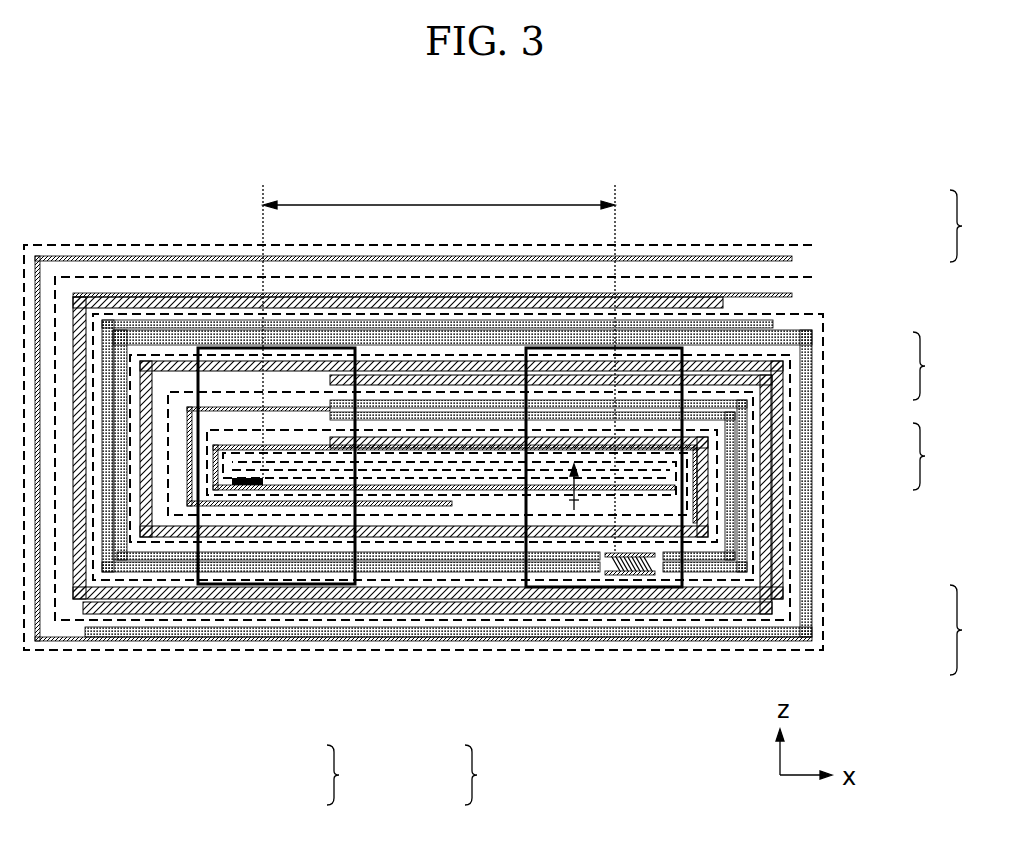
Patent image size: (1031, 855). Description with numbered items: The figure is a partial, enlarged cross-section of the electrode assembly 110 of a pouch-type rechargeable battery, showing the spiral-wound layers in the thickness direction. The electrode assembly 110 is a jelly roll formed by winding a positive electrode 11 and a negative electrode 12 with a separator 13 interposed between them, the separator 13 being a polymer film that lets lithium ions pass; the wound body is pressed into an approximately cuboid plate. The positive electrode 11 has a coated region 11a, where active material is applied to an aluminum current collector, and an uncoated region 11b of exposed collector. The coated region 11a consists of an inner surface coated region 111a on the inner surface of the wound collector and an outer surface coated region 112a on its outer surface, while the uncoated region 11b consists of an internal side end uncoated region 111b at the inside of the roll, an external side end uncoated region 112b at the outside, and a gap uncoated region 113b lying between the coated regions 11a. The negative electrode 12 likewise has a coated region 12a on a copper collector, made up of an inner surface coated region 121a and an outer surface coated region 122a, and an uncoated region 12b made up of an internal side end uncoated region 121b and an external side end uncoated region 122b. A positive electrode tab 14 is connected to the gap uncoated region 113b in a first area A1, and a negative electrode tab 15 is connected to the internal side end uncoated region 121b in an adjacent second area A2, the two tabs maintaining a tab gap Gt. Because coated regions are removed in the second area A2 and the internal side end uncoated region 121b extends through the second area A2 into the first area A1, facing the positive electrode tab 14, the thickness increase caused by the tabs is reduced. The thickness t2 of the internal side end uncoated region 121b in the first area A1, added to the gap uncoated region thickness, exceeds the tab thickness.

The electrode assembly 110 is at (447, 137).
The separator 13 is at (755, 547).
The external side end uncoated region 112b is at (688, 257).
The external side end uncoated region 122b is at (758, 294).
The internal side end uncoated region 121b is at (418, 492).
The uncoated region 12b is at (975, 226).
The gap uncoated region 113b is at (658, 575).
The internal side end uncoated region 111b is at (330, 507).
The uncoated region 11b is at (975, 630).
The inner surface coated region 111a is at (732, 430).
The outer surface coated region 112a is at (742, 462).
The coated region 11a is at (938, 456).
The inner surface coated region 121a is at (775, 386).
The outer surface coated region 122a is at (767, 357).
The coated region 12a is at (938, 366).
The positive electrode tab 14 is at (623, 576).
The negative electrode tab 15 is at (247, 485).
The second area A2 is at (220, 584).
The first area A1 is at (604, 528).
The tab gap Gt is at (439, 364).
The thickness of internal side end uncoated region t2 is at (584, 484).
The positive electrode 11 is at (328, 777).
The negative electrode 12 is at (466, 777).